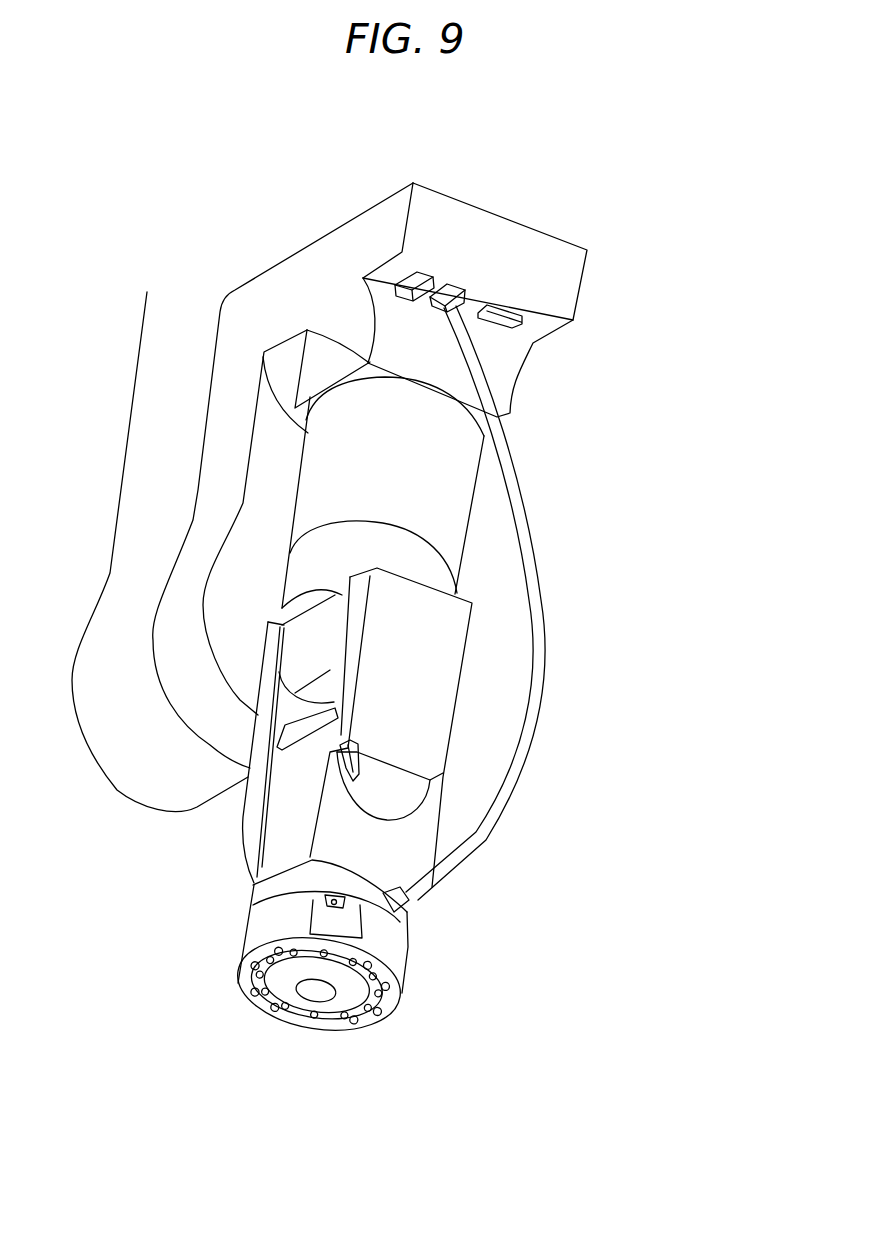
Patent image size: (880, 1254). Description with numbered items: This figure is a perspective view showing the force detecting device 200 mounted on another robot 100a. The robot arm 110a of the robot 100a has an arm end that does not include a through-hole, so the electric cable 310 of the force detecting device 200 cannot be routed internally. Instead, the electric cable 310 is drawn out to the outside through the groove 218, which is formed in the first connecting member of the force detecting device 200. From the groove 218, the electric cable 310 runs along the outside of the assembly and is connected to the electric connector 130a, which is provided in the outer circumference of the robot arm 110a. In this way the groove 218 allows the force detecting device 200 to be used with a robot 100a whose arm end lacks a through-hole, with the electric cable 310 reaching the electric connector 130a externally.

The robot 100a is at (608, 128).
The electric connector 130a is at (455, 294).
The robot arm 110a is at (473, 663).
The electric cable 310 is at (518, 757).
The groove 218 is at (407, 907).
The force detecting device 200 is at (408, 1012).